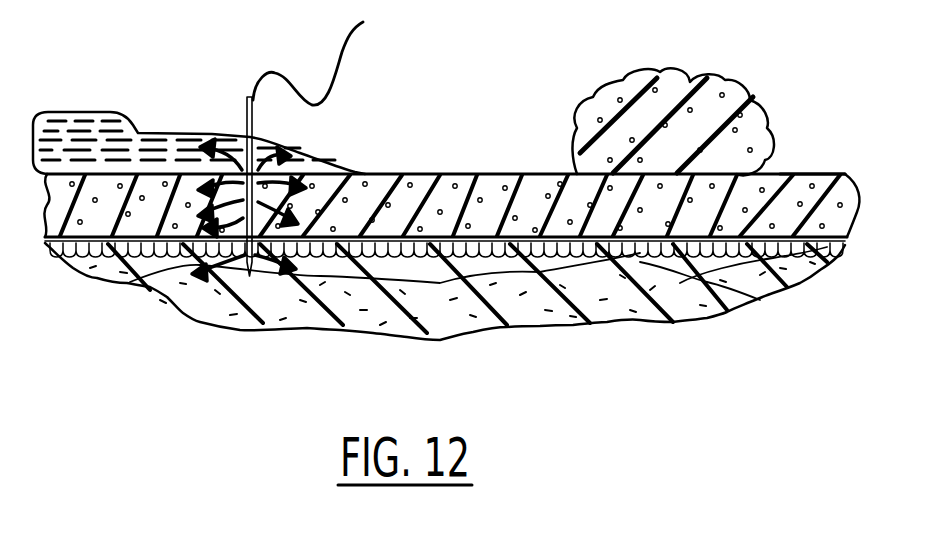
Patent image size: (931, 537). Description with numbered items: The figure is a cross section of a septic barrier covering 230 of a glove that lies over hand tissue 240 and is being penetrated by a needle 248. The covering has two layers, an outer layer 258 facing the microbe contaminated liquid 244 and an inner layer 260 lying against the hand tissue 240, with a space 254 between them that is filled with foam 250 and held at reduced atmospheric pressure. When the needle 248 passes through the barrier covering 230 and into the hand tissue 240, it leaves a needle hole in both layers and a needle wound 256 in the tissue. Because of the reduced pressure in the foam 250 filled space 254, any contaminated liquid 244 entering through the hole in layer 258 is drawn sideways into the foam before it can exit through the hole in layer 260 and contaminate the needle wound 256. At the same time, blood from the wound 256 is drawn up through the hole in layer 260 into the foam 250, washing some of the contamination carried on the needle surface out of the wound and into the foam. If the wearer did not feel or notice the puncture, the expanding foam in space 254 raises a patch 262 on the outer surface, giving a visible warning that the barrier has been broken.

The septic barrier covering 230 is at (473, 173).
The hand tissue 240 is at (693, 318).
The microbe contaminated liquid 244 is at (183, 152).
The needle 248 is at (246, 97).
The foam 250 is at (420, 205).
The foam filled space 254 is at (820, 173).
The needle wound 256 is at (247, 257).
The layer 258 is at (375, 173).
The layer 260 is at (493, 233).
The patch 262 is at (733, 80).